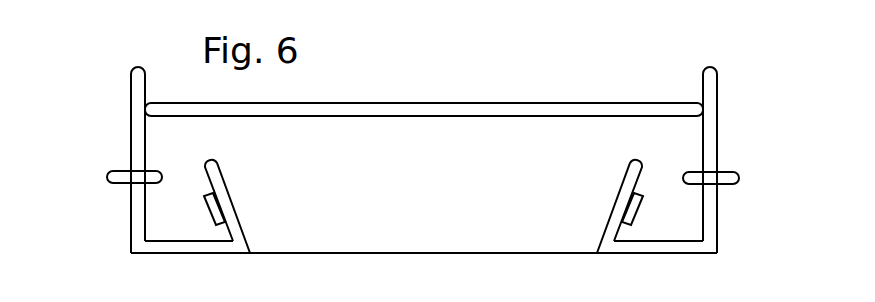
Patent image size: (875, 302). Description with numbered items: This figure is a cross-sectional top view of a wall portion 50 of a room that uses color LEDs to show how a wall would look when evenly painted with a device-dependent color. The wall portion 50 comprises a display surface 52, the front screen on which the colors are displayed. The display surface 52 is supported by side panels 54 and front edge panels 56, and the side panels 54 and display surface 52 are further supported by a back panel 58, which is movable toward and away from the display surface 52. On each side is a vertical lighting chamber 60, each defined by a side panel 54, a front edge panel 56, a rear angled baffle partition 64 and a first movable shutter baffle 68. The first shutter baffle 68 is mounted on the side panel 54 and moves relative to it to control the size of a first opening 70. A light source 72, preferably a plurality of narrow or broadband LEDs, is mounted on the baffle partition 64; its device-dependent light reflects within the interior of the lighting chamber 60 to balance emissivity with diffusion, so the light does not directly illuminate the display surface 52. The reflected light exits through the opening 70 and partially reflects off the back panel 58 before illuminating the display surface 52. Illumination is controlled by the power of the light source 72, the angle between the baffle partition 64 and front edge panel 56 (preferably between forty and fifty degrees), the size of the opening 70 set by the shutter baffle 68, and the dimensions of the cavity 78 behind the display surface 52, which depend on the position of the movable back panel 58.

The wall portion 50 is at (782, 187).
The display surface 52 is at (424, 255).
The side panel 54 is at (135, 107).
The front edge panel 56 is at (150, 254).
The back panel 58 is at (415, 115).
The vertical lighting chamber 60 is at (160, 229).
The rear angled baffle partition 64 is at (237, 224).
The first movable shutter baffle 68 is at (118, 178).
The first opening 70 is at (181, 175).
The light source 72 is at (213, 210).
The cavity 78 is at (393, 185).